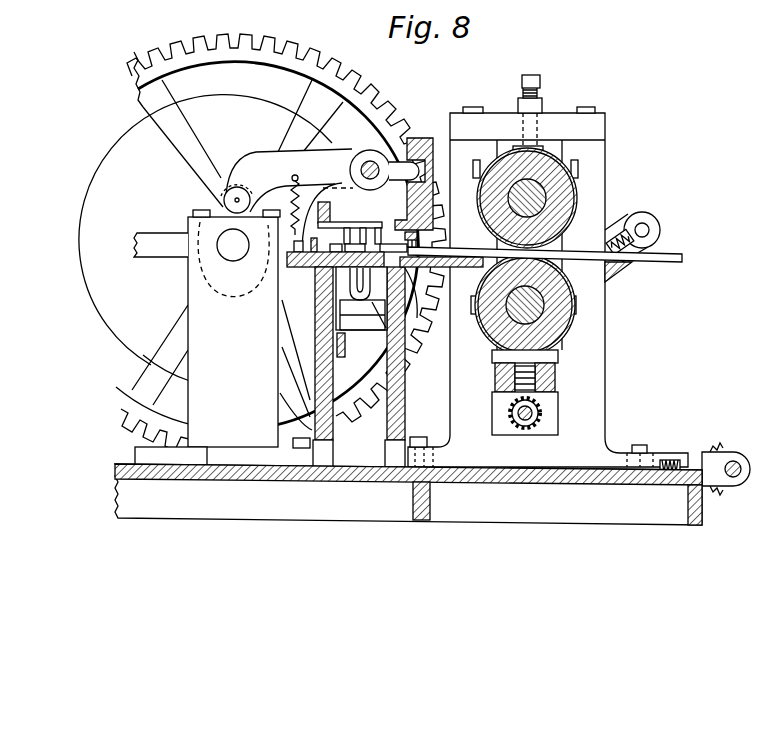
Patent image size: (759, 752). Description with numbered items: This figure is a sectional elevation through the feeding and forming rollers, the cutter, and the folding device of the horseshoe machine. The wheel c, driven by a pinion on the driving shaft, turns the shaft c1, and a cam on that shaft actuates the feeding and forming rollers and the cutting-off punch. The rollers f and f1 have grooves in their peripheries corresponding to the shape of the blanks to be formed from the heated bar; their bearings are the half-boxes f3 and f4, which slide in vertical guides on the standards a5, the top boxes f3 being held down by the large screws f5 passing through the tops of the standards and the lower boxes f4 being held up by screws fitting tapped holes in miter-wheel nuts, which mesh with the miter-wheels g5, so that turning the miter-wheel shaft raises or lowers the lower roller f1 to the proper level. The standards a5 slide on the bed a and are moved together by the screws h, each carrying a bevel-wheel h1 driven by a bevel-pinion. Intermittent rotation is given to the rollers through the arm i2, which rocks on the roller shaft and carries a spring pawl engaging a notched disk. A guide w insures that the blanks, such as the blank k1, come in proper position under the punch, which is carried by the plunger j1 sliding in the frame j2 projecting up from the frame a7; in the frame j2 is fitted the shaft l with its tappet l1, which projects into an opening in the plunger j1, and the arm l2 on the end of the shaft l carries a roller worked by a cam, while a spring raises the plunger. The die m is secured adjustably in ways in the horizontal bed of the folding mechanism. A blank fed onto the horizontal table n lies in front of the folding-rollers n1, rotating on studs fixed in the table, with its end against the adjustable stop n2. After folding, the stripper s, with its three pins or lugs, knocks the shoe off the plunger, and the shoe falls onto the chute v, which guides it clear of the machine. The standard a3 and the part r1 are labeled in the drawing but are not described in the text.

The wheel c is at (262, 244).
The shaft c1 is at (191, 245).
The standard / pillar a3 is at (222, 338).
The arm l2 is at (286, 181).
The shaft l is at (370, 170).
The tappet l1 is at (403, 180).
The frame j2 is at (329, 216).
The plunger j1 is at (411, 193).
The stripper s is at (350, 223).
The horizontal table n is at (340, 254).
The folding-rollers n1 is at (359, 239).
The adjustable stop n2 is at (298, 213).
The frame a7 is at (369, 367).
The channel piece r1 is at (361, 312).
The chute v is at (379, 316).
The die m is at (425, 293).
The forming and feeding roller f is at (548, 287).
The screws f5 is at (539, 92).
The top half-boxes f3 is at (532, 198).
The forming and feeding roller f1 is at (532, 305).
The lower half-boxes f4 is at (539, 349).
The standards a5 is at (522, 377).
The miter-wheels g5 is at (525, 413).
The arm i2 is at (640, 247).
The blank k1 is at (441, 250).
The guide w is at (545, 248).
The screws h is at (670, 457).
The bevel-wheel h1 is at (726, 460).
The bed a is at (408, 494).